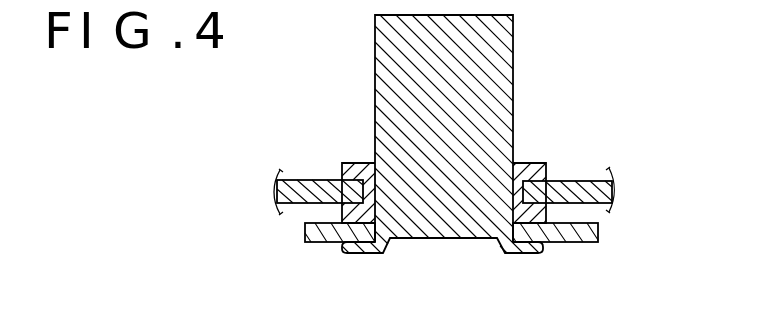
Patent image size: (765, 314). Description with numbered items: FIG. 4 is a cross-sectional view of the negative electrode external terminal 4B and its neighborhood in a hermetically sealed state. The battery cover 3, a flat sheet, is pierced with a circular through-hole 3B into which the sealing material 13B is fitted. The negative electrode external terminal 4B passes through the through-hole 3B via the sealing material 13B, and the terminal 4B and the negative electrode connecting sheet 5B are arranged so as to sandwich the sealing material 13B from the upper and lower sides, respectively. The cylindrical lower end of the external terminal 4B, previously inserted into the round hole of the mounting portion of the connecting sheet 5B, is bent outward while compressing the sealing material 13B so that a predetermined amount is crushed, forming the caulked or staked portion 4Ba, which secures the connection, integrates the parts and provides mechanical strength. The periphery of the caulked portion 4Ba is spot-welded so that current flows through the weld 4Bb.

The negative electrode external terminal 4B is at (513, 79).
The caulked or staked portion 4Ba is at (522, 255).
The weld 4Bb is at (545, 241).
The sealing material 13B is at (357, 163).
The through-hole 3B is at (518, 180).
The battery cover 3 is at (573, 181).
The negative electrode connecting sheet 5B is at (322, 243).